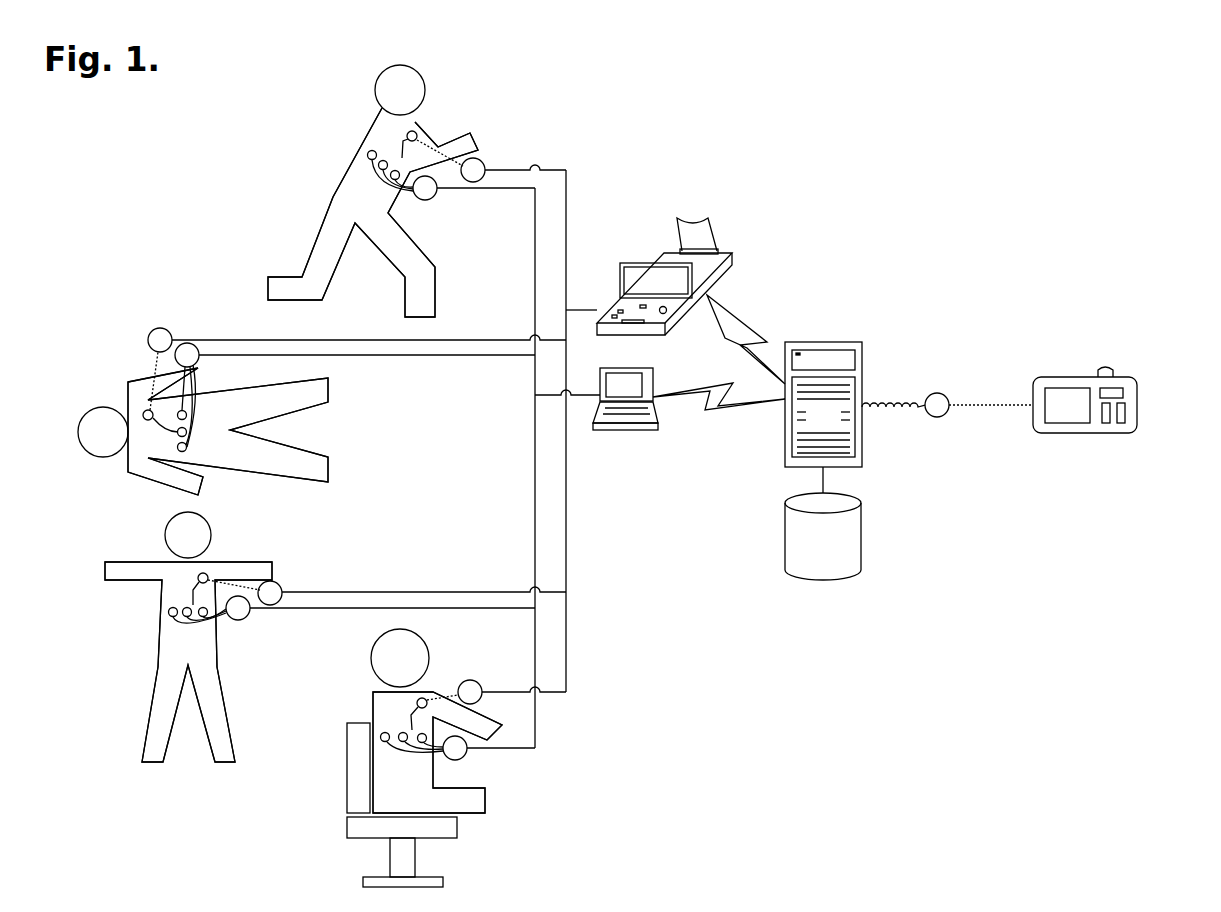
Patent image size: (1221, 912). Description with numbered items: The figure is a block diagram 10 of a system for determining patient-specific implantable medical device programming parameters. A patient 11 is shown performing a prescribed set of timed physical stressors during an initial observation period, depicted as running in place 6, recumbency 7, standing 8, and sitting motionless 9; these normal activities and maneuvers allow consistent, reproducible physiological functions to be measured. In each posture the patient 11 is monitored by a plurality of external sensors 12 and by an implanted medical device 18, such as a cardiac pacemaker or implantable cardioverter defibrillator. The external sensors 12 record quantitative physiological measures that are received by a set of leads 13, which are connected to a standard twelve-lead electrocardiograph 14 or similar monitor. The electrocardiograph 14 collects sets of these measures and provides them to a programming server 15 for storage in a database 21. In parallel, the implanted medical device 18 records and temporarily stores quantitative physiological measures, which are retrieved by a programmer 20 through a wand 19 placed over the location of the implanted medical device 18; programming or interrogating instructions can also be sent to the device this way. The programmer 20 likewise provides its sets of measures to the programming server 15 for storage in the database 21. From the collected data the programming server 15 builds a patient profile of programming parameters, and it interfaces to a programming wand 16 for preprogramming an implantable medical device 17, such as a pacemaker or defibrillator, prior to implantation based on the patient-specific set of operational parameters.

The block diagram 10 is at (138, 120).
The running in place 6 is at (330, 101).
The recumbency 7 is at (100, 389).
The standing 8 is at (136, 541).
The sitting motionless 9 is at (356, 683).
The patient 11 is at (372, 139).
The external sensors 12 is at (386, 151).
The leads 13 is at (427, 200).
The electrocardiograph 14 is at (627, 367).
The programming server 15 is at (822, 342).
The programming wand 16 is at (940, 418).
The implantable medical device 17 is at (1137, 393).
The implanted medical device 18 is at (420, 123).
The wand 19 is at (485, 160).
The programmer 20 is at (725, 244).
The database 21 is at (866, 530).